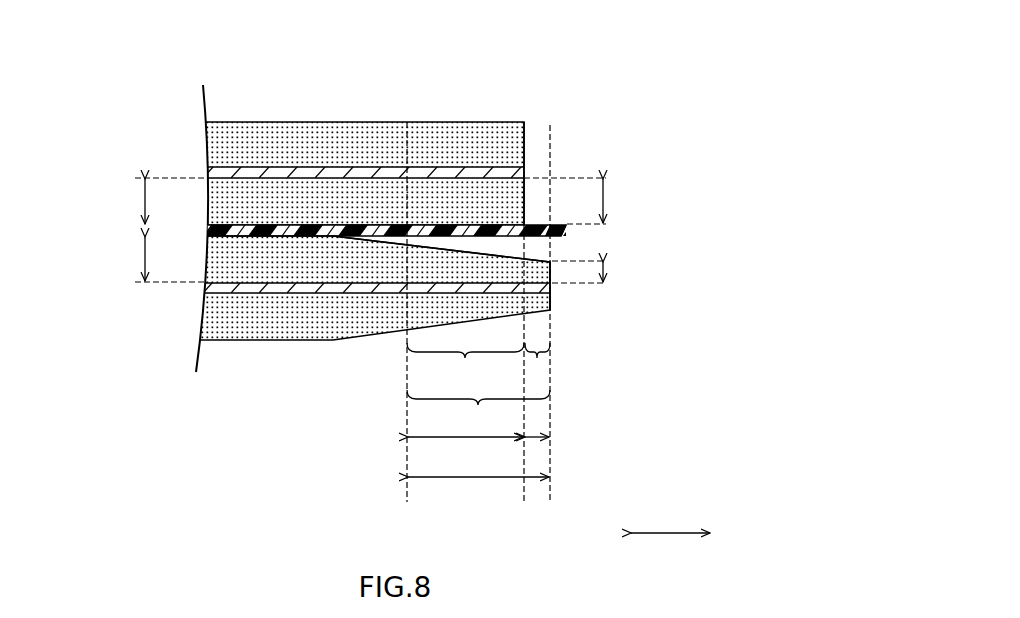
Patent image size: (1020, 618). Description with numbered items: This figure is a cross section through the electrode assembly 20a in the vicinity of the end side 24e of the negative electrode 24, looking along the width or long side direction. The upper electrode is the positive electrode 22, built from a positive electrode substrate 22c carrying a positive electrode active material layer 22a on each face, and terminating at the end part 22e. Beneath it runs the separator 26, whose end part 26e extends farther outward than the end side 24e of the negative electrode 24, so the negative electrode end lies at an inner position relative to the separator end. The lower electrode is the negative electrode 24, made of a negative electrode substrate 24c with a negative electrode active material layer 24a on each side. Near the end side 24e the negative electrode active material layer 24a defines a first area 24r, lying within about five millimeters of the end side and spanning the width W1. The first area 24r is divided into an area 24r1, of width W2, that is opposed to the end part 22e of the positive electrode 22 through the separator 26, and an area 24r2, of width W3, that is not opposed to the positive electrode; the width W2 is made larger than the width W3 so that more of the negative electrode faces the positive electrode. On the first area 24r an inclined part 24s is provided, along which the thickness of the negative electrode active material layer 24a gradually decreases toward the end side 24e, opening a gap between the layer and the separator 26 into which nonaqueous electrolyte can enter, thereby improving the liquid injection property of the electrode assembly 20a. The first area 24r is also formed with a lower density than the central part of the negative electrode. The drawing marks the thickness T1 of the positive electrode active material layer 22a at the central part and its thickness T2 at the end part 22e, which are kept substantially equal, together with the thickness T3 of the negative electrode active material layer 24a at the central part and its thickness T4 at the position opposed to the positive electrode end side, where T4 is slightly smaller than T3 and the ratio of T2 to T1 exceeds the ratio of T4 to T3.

The electrode assembly 20a is at (411, 291).
The positive electrode 22 is at (303, 164).
The positive electrode active material layer 22a is at (212, 150).
The positive electrode substrate 22c is at (212, 172).
The end part of the positive electrode 22e is at (524, 150).
The separator 26 is at (205, 231).
The end part of the separator 26e is at (566, 231).
The negative electrode 24 is at (316, 296).
The negative electrode active material layer 24a is at (197, 263).
The negative electrode substrate 24c is at (196, 290).
The end side of the negative electrode 24e is at (551, 290).
The inclined part 24s is at (540, 255).
The first area 24r is at (478, 408).
The area opposed to the end part of the positive electrode 24r1 is at (465, 362).
The area not opposed to the end part of the positive electrode 24r2 is at (537, 358).
The thickness of the positive electrode active material layer at the central part T1 is at (163, 201).
The thickness of the positive electrode active material layer at the end part T2 is at (624, 201).
The thickness of the negative electrode active material layer at the central part T3 is at (163, 259).
The thickness of the negative electrode active material layer opposed to the positiv T4 is at (624, 274).
The width of the first area W1 is at (478, 492).
The width of the area opposed to the end part of the positive electrode W2 is at (465, 452).
The width of the area not opposed to the end part of the positive electrode W3 is at (537, 440).